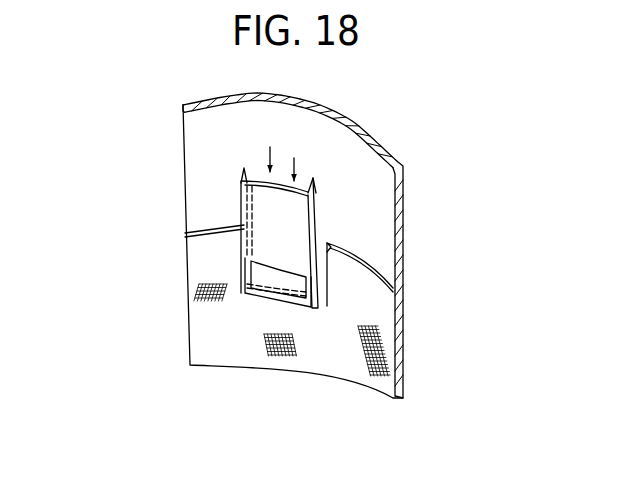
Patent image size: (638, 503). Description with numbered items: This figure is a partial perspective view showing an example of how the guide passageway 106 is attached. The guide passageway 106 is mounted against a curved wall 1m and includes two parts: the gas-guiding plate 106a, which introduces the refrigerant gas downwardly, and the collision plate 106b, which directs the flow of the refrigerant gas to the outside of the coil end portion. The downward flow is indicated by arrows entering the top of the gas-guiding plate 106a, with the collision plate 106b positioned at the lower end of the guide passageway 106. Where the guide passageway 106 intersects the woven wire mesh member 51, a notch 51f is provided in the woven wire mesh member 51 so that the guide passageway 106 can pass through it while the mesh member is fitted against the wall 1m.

The drum / curved housing wall 1m is at (357, 155).
The woven wire mesh member 51 is at (322, 300).
The notch 51f is at (322, 272).
The guide passageway 106 is at (240, 253).
The gas-guiding plate 106a is at (256, 203).
The collision plate 106b is at (300, 298).